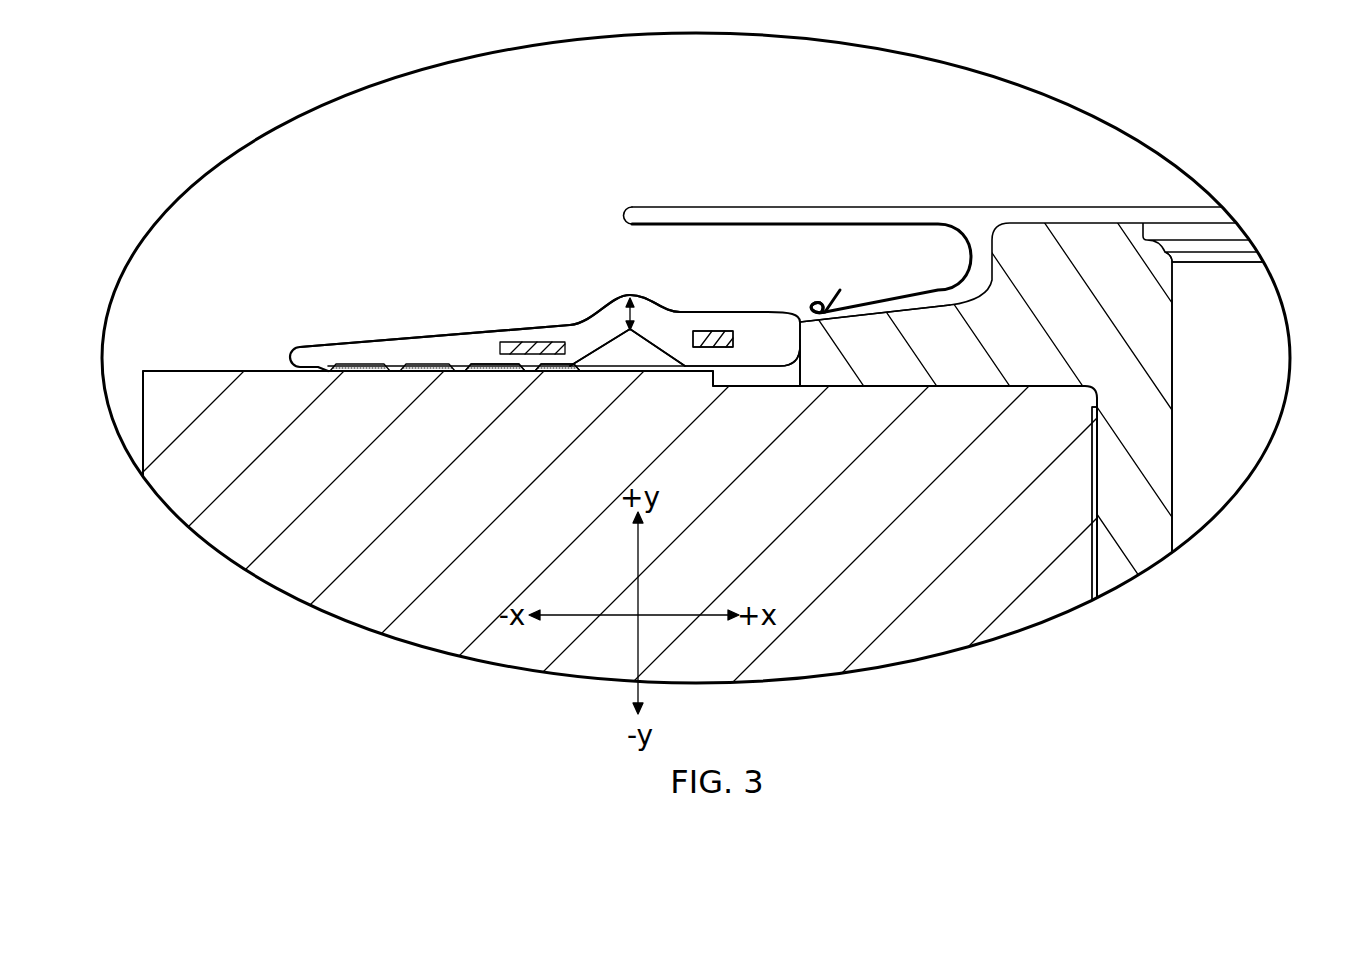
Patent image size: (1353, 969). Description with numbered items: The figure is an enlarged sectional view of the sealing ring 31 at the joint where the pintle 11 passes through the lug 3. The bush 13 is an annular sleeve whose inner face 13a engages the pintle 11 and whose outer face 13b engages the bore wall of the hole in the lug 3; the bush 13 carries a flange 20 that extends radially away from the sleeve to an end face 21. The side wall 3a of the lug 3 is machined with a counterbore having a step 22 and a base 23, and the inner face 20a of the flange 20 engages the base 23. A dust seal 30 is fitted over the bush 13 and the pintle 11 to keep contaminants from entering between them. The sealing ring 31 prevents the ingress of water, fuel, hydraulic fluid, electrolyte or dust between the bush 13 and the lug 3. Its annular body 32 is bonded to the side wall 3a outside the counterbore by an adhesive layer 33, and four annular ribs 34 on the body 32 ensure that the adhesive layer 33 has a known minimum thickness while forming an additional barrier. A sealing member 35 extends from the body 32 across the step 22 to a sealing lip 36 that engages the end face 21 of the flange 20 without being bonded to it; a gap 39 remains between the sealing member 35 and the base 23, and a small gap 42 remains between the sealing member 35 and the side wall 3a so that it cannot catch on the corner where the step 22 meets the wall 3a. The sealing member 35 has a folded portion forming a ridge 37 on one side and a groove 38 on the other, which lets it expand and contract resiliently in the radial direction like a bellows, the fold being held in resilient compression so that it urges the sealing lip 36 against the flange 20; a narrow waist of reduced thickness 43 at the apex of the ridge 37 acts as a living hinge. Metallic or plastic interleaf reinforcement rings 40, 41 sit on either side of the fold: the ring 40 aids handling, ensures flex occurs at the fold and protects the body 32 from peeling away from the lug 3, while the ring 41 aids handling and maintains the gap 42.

The lug 3 is at (322, 392).
The side wall 3a is at (198, 371).
The pintle 11 is at (1170, 310).
The bush 13 is at (1040, 250).
The inner face 13a is at (1172, 452).
The outer face 13b is at (1097, 465).
The flange 20 is at (902, 370).
The inner face 20a is at (963, 387).
The end face 21 is at (800, 378).
The step 22 is at (735, 362).
The base 23 is at (840, 387).
The dust seal 30 is at (910, 207).
The sealing ring 31 is at (426, 288).
The annular body 32 is at (478, 332).
The adhesive layer 33 is at (444, 372).
The annular ribs 34 is at (530, 373).
The sealing member 35 is at (706, 292).
The sealing lip 36 is at (803, 340).
The ridge 37 is at (618, 297).
The groove 38 is at (630, 330).
The gap 39 is at (742, 370).
The reinforcement ring 40 is at (532, 342).
The reinforcement ring 41 is at (703, 343).
The gap 42 is at (702, 367).
The reduced thickness 43 is at (638, 308).